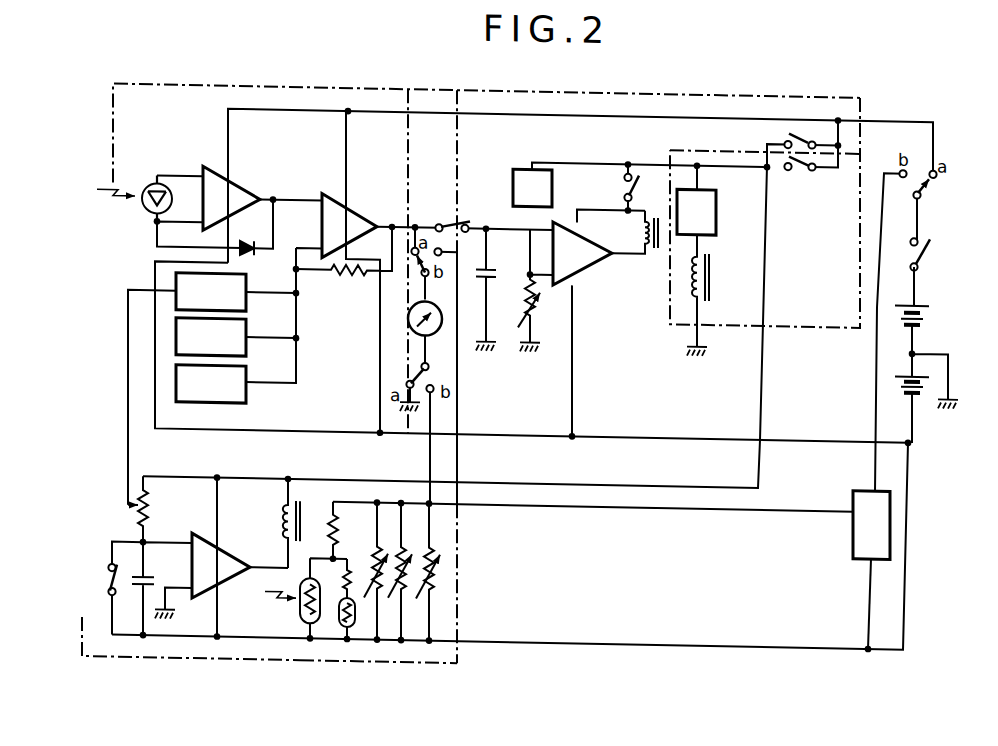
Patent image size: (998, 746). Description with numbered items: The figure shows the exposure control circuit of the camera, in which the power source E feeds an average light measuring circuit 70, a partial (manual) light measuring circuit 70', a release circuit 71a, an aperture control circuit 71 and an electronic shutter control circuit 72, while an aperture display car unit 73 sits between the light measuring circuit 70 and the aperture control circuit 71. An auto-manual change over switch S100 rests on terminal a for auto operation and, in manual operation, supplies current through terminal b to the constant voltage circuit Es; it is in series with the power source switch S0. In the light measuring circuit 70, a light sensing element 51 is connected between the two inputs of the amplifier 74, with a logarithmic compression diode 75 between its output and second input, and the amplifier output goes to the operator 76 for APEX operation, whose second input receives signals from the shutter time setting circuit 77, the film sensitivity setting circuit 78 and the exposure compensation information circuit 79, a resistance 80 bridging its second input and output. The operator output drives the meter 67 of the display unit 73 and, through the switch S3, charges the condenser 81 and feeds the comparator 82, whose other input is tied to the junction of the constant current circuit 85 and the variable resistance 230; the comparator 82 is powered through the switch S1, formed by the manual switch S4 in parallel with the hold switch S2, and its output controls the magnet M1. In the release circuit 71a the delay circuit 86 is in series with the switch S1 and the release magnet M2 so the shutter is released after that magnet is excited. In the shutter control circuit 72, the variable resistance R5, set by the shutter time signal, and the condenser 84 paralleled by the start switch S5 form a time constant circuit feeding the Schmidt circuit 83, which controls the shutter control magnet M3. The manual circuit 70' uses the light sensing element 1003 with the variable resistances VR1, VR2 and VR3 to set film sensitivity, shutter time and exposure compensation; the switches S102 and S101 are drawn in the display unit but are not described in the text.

The average light measuring circuit 70 is at (486, 116).
The aperture display car unit 73 is at (430, 90).
The aperture control circuit 71 is at (673, 92).
The release circuit 71a is at (727, 147).
The electronic shutter control circuit 72 is at (173, 663).
The partial light measuring circuit 70' is at (378, 688).
The light sensing element 51 is at (163, 190).
The amplifier 74 is at (231, 198).
The operator 76 is at (349, 226).
The logarithmic compression diode 75 is at (249, 259).
The shutter time setting circuit 77 is at (211, 292).
The film sensitivity setting circuit 78 is at (211, 337).
The exposure compensation information circuit 79 is at (211, 384).
The resistance 80 is at (343, 277).
The switch S3 is at (458, 224).
The switch S102 is at (417, 264).
The meter 67 is at (411, 330).
The switch S101 is at (420, 382).
The condenser 81 is at (497, 272).
The variable resistance 230 is at (533, 321).
The constant current circuit 85 is at (532, 188).
The manual switch S4 is at (636, 172).
The comparator 82 is at (582, 254).
The magnet M1 is at (652, 255).
The delay circuit 86 is at (696, 200).
The release magnet M2 is at (710, 281).
The hold switch S2 is at (805, 126).
The switch S1 is at (798, 165).
The auto-manual change over switch S100 is at (922, 190).
The power source switch S0 is at (923, 254).
The power source E is at (900, 315).
The constant voltage circuit Es is at (871, 570).
The variable resistance R5 is at (150, 505).
The condenser 84 is at (152, 588).
The start switch S5 is at (104, 588).
The Schmidt circuit 83 is at (221, 576).
The shutter control magnet M3 is at (308, 524).
The light sensing element 1003 is at (299, 612).
The variable resistance VR1 is at (377, 566).
The variable resistance VR2 is at (403, 567).
The variable resistance VR3 is at (428, 584).